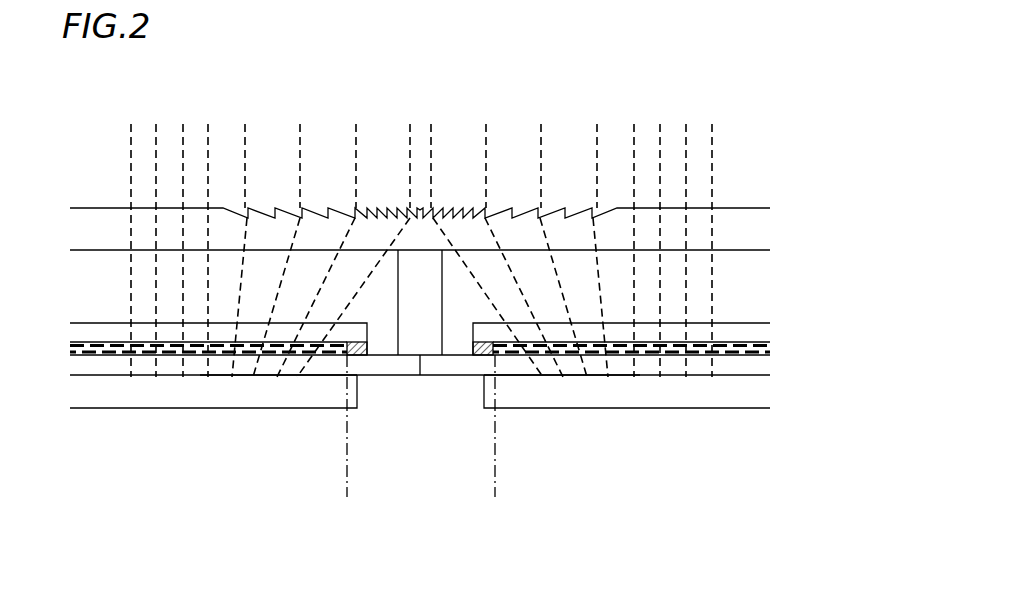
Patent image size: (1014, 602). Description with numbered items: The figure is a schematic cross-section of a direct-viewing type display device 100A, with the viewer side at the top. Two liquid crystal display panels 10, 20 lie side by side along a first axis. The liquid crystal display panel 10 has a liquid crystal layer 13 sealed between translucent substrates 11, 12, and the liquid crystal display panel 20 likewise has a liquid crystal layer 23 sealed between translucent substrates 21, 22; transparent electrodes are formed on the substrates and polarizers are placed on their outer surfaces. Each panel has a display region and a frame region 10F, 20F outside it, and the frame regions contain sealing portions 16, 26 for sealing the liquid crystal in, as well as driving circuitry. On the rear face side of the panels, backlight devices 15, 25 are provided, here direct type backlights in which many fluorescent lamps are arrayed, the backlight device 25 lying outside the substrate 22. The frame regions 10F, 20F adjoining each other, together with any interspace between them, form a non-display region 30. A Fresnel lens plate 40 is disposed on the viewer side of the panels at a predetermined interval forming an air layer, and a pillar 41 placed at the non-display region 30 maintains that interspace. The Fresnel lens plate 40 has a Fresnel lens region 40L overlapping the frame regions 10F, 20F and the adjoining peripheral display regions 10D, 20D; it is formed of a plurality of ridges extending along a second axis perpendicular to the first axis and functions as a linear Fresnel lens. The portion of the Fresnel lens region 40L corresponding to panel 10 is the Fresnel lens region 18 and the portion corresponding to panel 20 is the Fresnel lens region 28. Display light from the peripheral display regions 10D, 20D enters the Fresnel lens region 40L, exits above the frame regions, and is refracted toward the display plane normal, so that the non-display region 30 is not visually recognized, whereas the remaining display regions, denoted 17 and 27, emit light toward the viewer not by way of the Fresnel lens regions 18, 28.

The display device 100A is at (749, 79).
The Fresnel lens plate 40 is at (740, 216).
The Fresnel lens region 40L is at (617, 68).
The portion of display region 27 is at (125, 105).
The Fresnel lens region 28 is at (222, 105).
The Fresnel lens region 18 is at (618, 105).
The portion of display region 17 is at (633, 105).
The peripheral display region 20D is at (347, 190).
The frame region 20F is at (420, 190).
The frame region 10F is at (497, 190).
The peripheral display region 10D is at (497, 190).
The liquid crystal display panel 20 is at (187, 368).
The translucent substrate 21 is at (215, 306).
The liquid crystal layer 23 is at (188, 300).
The translucent substrate 22 is at (200, 431).
The backlight device 25 is at (274, 419).
The sealing portion 26 is at (331, 415).
The liquid crystal display panel 10 is at (653, 368).
The translucent substrate 11 is at (625, 306).
The liquid crystal layer 13 is at (650, 300).
The translucent substrate 12 is at (641, 431).
The backlight device 15 is at (566, 419).
The sealing portion 16 is at (508, 415).
The pillar 41 is at (436, 350).
The non-display region 30 is at (347, 502).